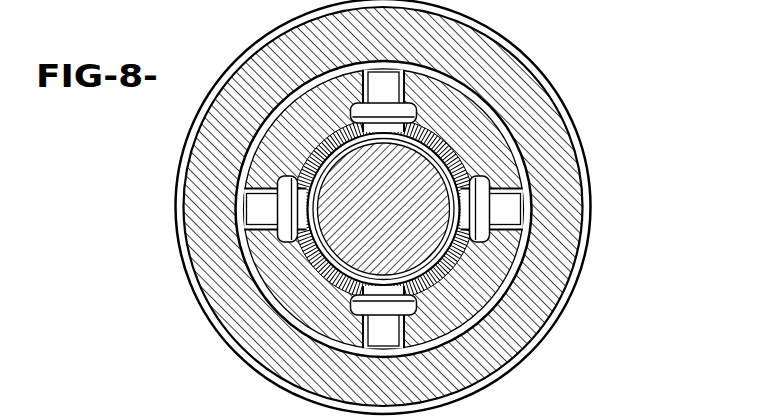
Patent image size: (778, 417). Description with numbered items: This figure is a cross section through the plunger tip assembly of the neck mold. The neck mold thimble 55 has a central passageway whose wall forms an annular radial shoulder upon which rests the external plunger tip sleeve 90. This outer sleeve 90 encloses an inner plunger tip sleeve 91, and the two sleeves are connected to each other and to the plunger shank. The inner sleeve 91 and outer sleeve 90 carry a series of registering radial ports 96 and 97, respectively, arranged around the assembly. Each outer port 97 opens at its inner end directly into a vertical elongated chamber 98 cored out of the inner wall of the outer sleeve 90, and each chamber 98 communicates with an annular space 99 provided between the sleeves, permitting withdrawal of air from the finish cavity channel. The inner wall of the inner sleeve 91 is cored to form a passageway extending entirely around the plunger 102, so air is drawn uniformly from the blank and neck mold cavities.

The neck mold thimble 55 is at (553, 325).
The external plunger tip sleeve 90 is at (508, 248).
The inner plunger tip sleeve 91 is at (463, 261).
The radial ports 96 is at (462, 203).
The radial ports 97 is at (510, 209).
The vertical elongated chamber 98 is at (488, 219).
The annular space 99 is at (302, 263).
The plunger 102 is at (348, 171).